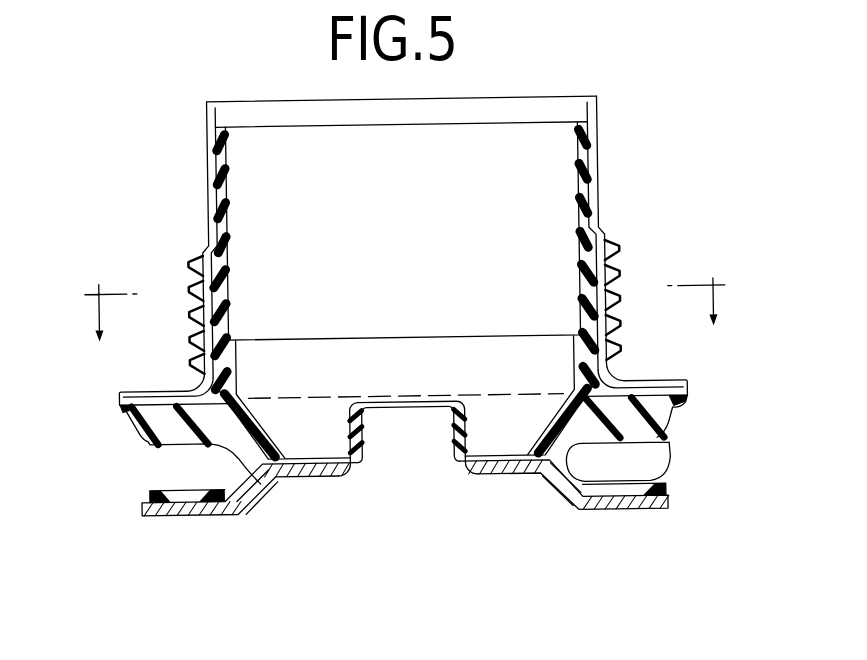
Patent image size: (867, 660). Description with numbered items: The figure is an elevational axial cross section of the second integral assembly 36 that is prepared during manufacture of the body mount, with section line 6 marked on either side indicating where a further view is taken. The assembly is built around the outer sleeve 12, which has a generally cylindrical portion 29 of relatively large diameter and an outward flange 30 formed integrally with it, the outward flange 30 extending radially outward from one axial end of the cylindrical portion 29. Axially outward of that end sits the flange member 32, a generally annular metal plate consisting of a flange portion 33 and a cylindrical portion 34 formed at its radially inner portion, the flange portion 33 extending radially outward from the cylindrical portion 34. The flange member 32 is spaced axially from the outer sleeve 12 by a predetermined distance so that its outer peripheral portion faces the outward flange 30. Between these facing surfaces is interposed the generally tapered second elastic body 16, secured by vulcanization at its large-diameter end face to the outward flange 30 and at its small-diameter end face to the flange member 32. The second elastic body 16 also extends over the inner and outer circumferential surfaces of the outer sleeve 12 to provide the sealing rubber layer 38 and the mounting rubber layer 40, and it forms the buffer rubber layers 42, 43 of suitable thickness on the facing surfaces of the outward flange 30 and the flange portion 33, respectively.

The outer sleeve 12 is at (612, 172).
The second elastic body 16 is at (238, 452).
The cylindrical portion 29 is at (591, 145).
The outward flange 30 is at (659, 392).
The flange member 32 is at (602, 530).
The flange portion 33 is at (653, 509).
The cylindrical portion 34 is at (361, 433).
The second integral assembly 36 is at (190, 73).
The sealing rubber layer 38 is at (588, 250).
The mounting rubber layer 40 is at (198, 264).
The buffer rubber layer 42 is at (660, 434).
The buffer rubber layer 43 is at (652, 482).
The section line 6- 6 is at (414, 283).